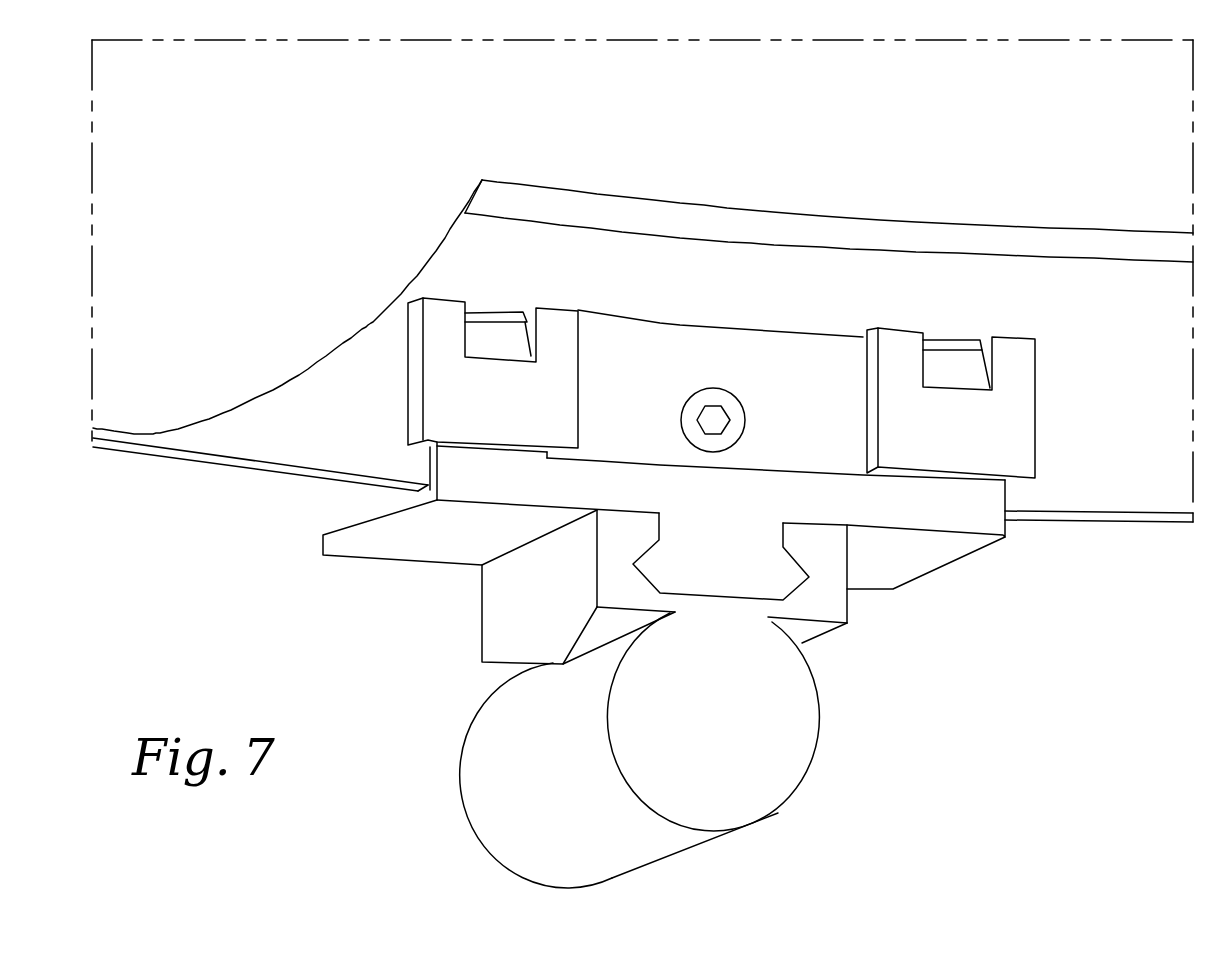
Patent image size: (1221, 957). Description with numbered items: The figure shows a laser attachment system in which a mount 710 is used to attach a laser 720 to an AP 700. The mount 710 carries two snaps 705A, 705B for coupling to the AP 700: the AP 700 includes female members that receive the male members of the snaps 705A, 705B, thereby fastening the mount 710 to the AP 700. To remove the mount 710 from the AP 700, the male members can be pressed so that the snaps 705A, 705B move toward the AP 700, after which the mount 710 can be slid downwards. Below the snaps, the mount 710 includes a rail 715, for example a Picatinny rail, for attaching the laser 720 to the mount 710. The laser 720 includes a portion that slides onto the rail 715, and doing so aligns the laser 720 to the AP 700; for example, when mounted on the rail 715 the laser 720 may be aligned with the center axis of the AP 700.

The AP 700 is at (1137, 522).
The snap 705A is at (952, 350).
The snap 705B is at (490, 318).
The mount 710 is at (893, 578).
The rail 715 is at (737, 588).
The laser 720 is at (697, 845).